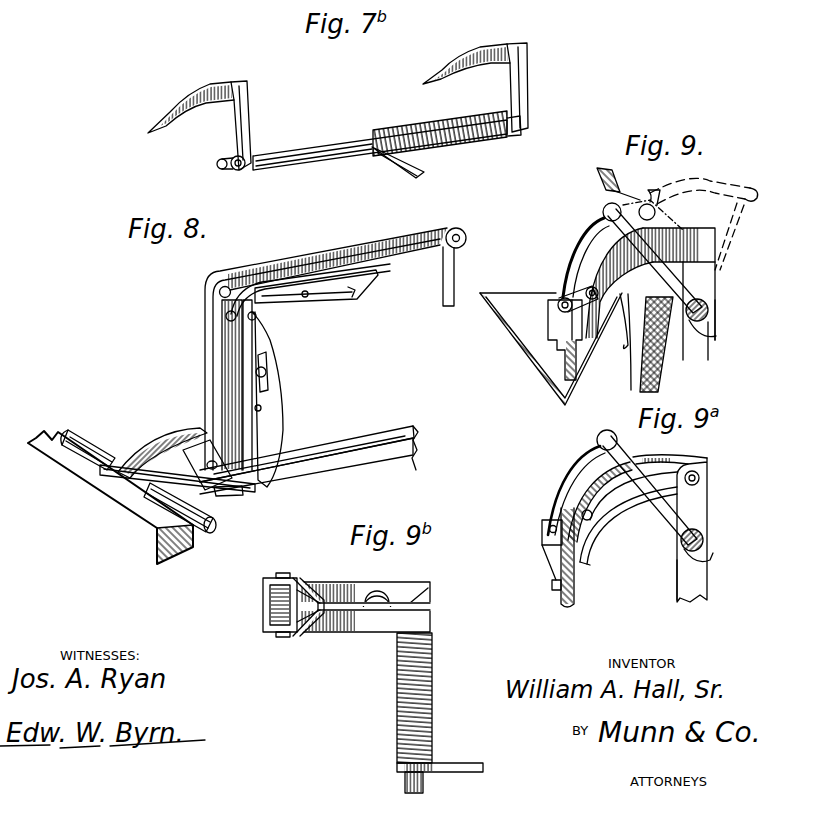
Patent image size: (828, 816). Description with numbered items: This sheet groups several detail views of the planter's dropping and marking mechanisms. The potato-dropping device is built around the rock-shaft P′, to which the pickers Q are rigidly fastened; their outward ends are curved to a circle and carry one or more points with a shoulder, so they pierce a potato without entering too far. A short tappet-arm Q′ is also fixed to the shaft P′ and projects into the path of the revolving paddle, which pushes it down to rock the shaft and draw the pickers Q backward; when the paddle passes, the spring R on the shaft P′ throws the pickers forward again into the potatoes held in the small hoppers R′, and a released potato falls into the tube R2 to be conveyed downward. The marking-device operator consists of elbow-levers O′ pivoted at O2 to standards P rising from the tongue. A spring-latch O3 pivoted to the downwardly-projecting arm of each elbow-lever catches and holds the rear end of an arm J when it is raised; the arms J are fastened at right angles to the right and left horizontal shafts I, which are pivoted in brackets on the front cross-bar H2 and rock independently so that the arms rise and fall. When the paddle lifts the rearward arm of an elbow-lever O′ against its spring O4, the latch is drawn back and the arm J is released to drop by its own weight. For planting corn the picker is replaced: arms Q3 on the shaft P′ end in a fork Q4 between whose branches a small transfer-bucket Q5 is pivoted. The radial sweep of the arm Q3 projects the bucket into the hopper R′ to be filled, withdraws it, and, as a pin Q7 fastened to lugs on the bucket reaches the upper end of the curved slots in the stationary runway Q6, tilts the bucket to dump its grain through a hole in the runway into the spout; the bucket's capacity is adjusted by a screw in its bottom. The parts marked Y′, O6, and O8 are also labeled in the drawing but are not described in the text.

In FIG. 7B, the pickers Q is at (338, 96).
In FIG. 7B, the rock-shaft P′ is at (318, 148).
In FIG. 9, the rock-shaft P′ is at (712, 314).
In FIG. 9A, the rock-shaft P′ is at (686, 553).
In FIG. 9B, the rock-shaft P′ is at (403, 779).
In FIG. 7B, the tappet-arm Q′ is at (424, 172).
In FIG. 8, the tappet-arm Q′ is at (316, 297).
In FIG. 9B, the tappet-arm Q′ is at (443, 755).
In FIG. 7B, the spring R is at (440, 137).
In FIG. 9B, the spring R is at (434, 702).
In FIG. 8, the standards P is at (215, 366).
In FIG. 8, the elbow-levers O′ is at (331, 260).
In FIG. 8, the pivots of elbow-levers O2 is at (229, 276).
In FIG. 8, the spring-latch O3 is at (280, 450).
In FIG. 8, the springs O4 is at (275, 272).
In FIG. 8, the rail Y′ is at (365, 450).
In FIG. 8, the front cross-bar H2 is at (158, 554).
In FIG. 8, the horizontal shafts I is at (96, 448).
In FIG. 8, the rearwardly-projecting arm J is at (178, 433).
In FIG. 9, the arms Q3 is at (592, 224).
In FIG. 9A, the arms Q3 is at (585, 456).
In FIG. 9B, the arms Q3 is at (418, 600).
In FIG. 9, the fork Q4 is at (560, 300).
In FIG. 9B, the fork Q4 is at (310, 580).
In FIG. 9, the transfer-bucket Q5 is at (556, 325).
In FIG. 9A, the transfer-bucket Q5 is at (546, 543).
In FIG. 9B, the transfer-bucket Q5 is at (264, 604).
In FIG. 9A, the curved stationary runway Q6 is at (628, 518).
In FIG. 9B, the curved stationary runway Q6 is at (352, 626).
In FIG. 9, the pin Q7 is at (585, 289).
In FIG. 9A, the pin Q7 is at (578, 510).
In FIG. 9, the small hoppers R′ is at (505, 292).
In FIG. 9, the tube R2 is at (660, 388).
In FIG. 9, the guide O6 is at (621, 342).
In FIG. 9A, the tab O8 is at (551, 586).